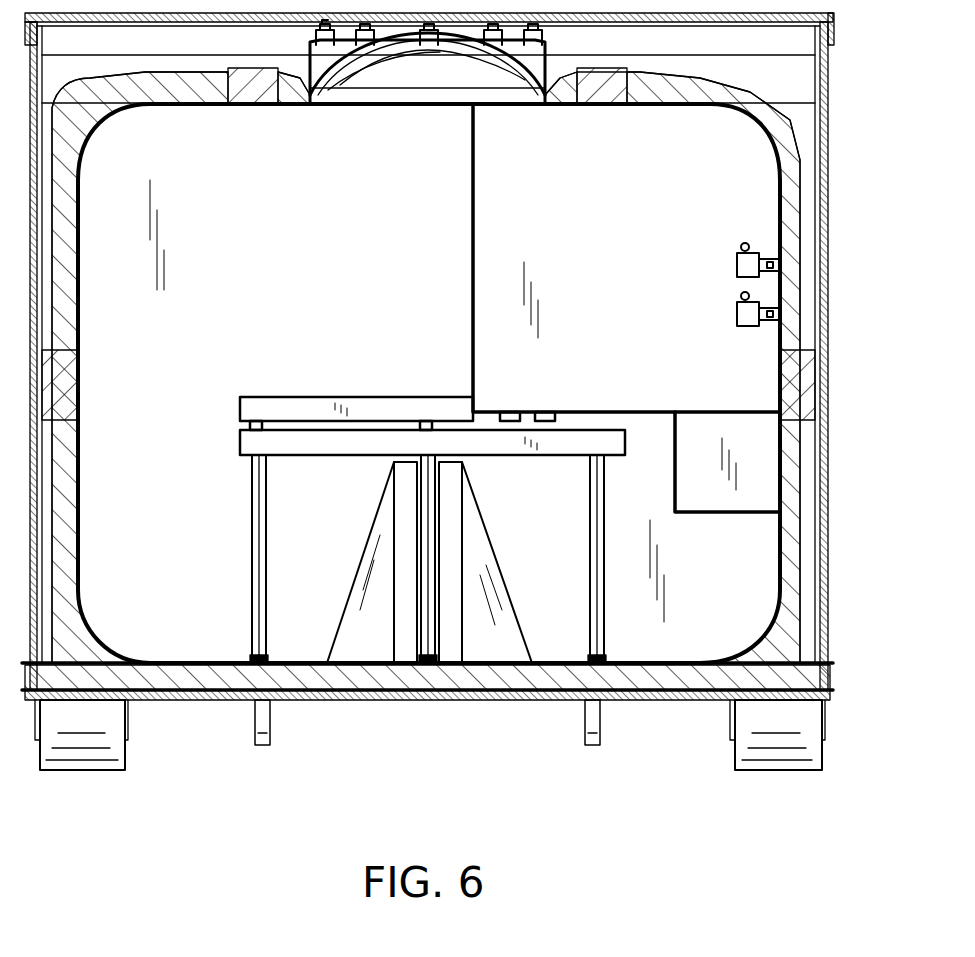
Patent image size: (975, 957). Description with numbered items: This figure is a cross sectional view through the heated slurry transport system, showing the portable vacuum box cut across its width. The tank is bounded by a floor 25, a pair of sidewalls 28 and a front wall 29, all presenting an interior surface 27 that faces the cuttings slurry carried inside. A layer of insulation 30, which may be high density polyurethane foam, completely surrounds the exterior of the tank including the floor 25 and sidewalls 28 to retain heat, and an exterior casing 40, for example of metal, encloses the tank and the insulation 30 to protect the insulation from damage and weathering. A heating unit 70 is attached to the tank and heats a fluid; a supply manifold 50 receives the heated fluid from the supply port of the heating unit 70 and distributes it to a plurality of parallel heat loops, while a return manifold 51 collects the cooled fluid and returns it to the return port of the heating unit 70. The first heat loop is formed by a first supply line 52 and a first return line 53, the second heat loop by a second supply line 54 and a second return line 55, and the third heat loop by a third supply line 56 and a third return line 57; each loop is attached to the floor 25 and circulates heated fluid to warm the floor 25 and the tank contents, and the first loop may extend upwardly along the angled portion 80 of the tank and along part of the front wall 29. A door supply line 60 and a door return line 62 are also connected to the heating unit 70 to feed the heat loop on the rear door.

The floor 25 is at (230, 660).
The interior surface 27 is at (780, 170).
The sidewalls 28 is at (80, 508).
The front wall 29 is at (308, 295).
The insulation 30 is at (775, 130).
The exterior casing 40 is at (828, 80).
The supply manifold 50 is at (372, 397).
The return manifold 51 is at (333, 452).
The first supply line 52 is at (255, 650).
The first return line 53 is at (268, 650).
The second supply line 54 is at (420, 650).
The second return line 55 is at (437, 650).
The third supply line 56 is at (588, 650).
The third return line 57 is at (606, 650).
The door supply line 60 is at (780, 300).
The door return line 62 is at (780, 250).
The heating unit 70 is at (624, 324).
The angled portion 80 is at (460, 560).